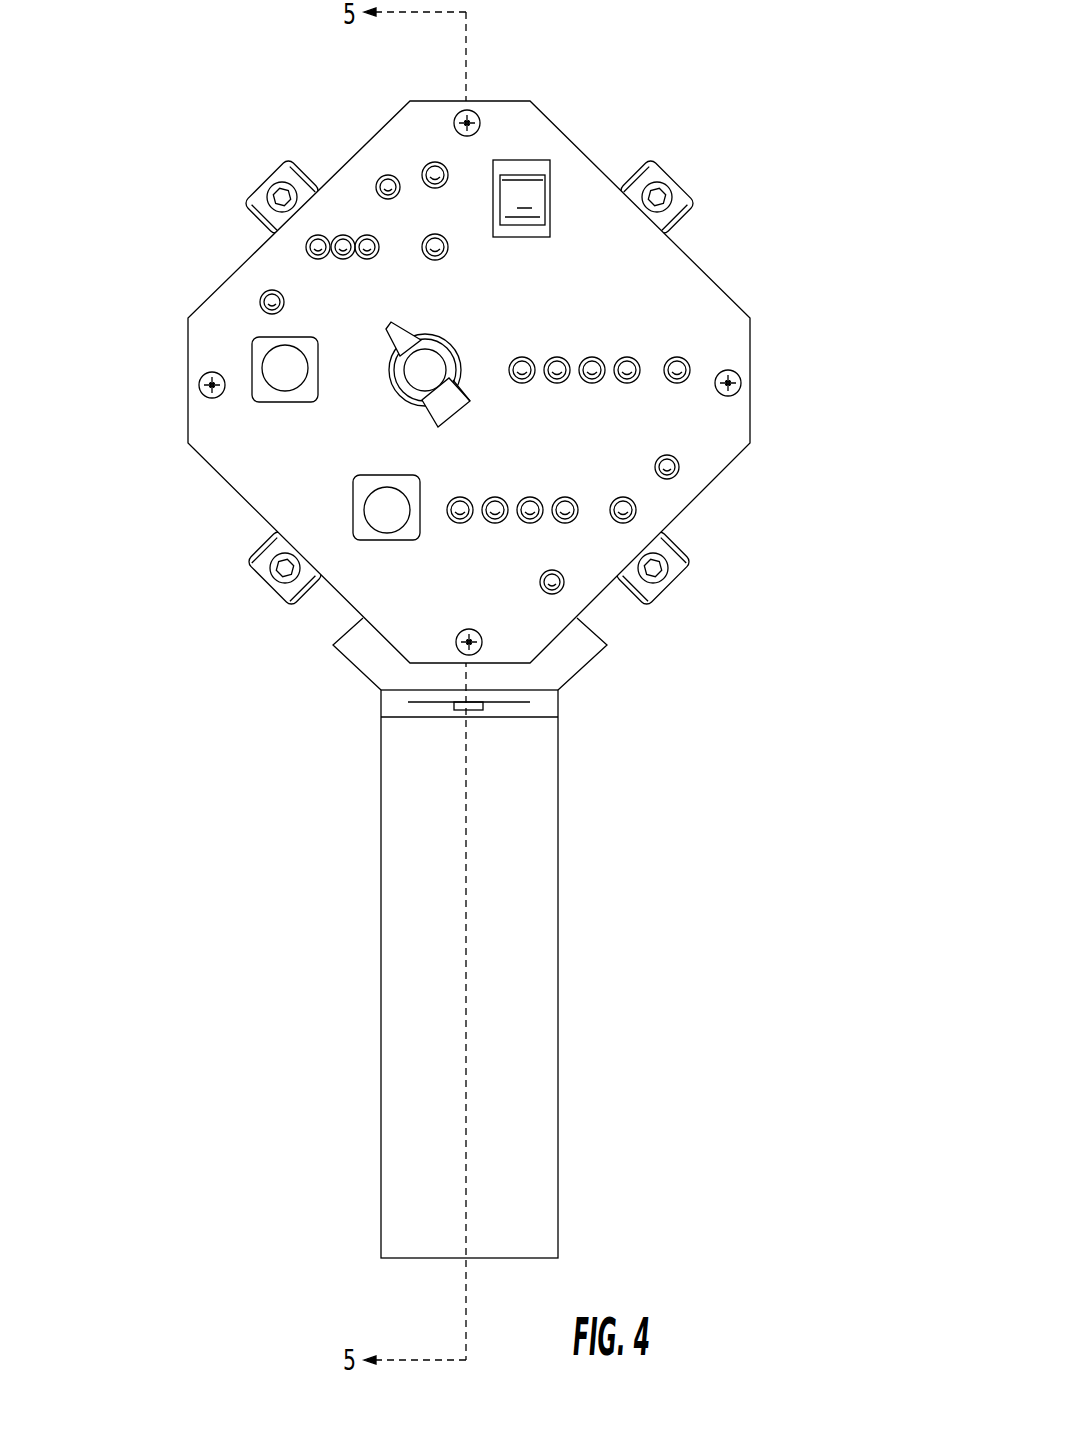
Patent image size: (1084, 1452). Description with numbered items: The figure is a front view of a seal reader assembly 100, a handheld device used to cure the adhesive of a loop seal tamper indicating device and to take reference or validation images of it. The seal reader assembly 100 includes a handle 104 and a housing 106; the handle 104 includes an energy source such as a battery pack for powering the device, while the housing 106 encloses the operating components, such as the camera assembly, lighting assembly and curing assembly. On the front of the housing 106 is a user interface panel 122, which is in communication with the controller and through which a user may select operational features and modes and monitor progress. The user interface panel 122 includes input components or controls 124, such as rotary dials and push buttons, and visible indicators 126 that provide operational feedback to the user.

The seal reader assembly 100 is at (777, 96).
The handle 104 is at (558, 975).
The housing 106 is at (752, 318).
The user interface panel 122 is at (648, 296).
The input components or controls 124 is at (357, 507).
The visible indicators 126 is at (633, 507).